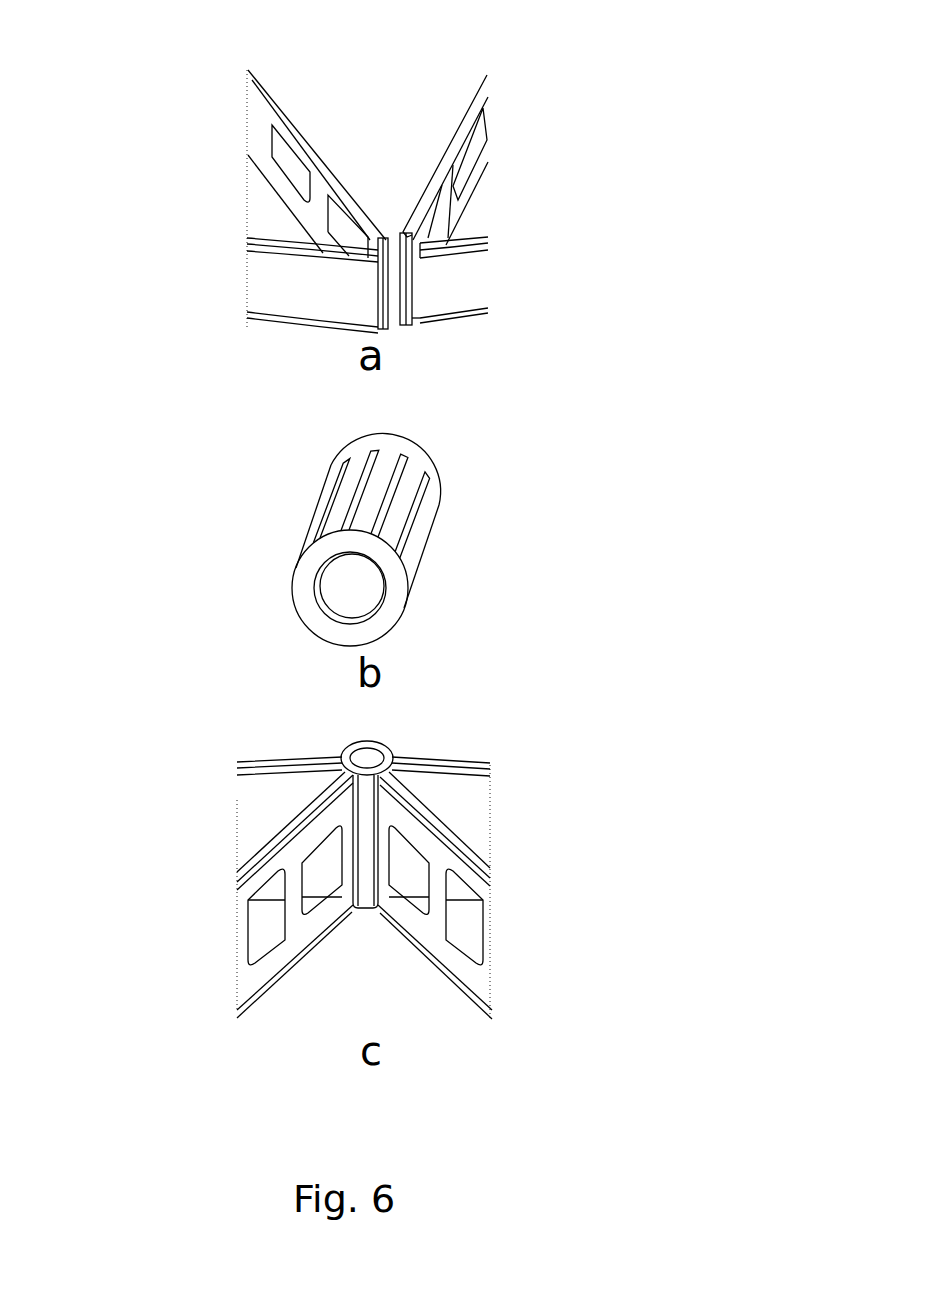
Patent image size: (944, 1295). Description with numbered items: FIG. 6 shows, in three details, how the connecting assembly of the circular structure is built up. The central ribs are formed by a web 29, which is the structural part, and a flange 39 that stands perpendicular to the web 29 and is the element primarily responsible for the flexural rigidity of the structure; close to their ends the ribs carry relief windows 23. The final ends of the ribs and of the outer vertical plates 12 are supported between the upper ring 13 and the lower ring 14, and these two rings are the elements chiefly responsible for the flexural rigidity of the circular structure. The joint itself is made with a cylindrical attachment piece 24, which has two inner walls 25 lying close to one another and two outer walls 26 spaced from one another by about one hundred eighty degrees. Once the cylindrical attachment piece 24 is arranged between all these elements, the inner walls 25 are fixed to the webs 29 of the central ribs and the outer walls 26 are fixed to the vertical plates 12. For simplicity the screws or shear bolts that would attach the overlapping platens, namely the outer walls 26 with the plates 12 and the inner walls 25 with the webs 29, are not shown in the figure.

The outer vertical plate 12 is at (303, 283).
The upper ring 13 is at (487, 238).
The lower ring 14 is at (487, 310).
The relief window 23 is at (300, 170).
The cylindrical attachment piece 24 is at (445, 497).
The inner wall 25 is at (355, 481).
The outer wall 26 is at (302, 527).
The web 29 is at (320, 192).
The flange 39 is at (275, 106).